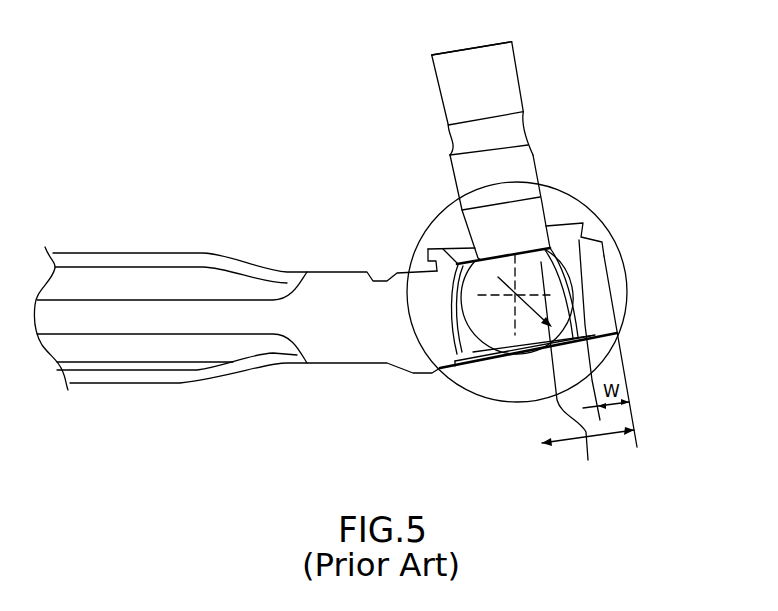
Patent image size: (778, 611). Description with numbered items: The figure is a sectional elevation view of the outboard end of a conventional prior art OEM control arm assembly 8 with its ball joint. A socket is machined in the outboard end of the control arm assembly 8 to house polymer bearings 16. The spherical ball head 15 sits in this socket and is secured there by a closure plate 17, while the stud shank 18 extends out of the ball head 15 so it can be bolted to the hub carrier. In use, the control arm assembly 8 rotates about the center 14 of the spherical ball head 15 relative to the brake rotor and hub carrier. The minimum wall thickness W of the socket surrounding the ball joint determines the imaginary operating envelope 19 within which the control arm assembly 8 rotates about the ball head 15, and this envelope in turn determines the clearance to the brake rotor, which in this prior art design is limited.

The control arm assembly 8 is at (128, 383).
The center 14 is at (545, 463).
The spherical ball head 15 is at (548, 272).
The polymer bearings 16 is at (475, 347).
The closure plate 17 is at (587, 378).
The stud shank 18 is at (519, 78).
The imaginary operating envelope 19 is at (422, 226).